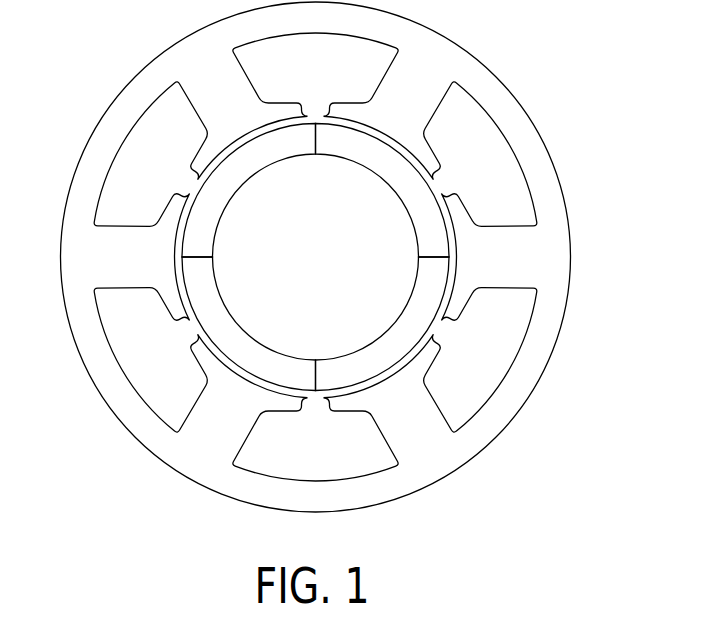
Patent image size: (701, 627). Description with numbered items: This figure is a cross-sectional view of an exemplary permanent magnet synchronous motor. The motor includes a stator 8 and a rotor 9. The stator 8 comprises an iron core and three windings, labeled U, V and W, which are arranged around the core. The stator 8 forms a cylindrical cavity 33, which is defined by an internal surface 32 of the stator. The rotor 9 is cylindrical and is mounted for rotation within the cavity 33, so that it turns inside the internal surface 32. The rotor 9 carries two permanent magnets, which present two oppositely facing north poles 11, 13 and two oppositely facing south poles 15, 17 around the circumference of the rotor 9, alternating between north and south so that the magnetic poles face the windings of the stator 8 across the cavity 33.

The stator 8 is at (323, 257).
The rotor 9 is at (427, 305).
The north pole 11 is at (313, 257).
The north pole 13 is at (208, 310).
The south pole 15 is at (207, 200).
The south pole 17 is at (357, 368).
The internal surface 32 is at (330, 120).
The cylindrical cavity 33 is at (440, 182).